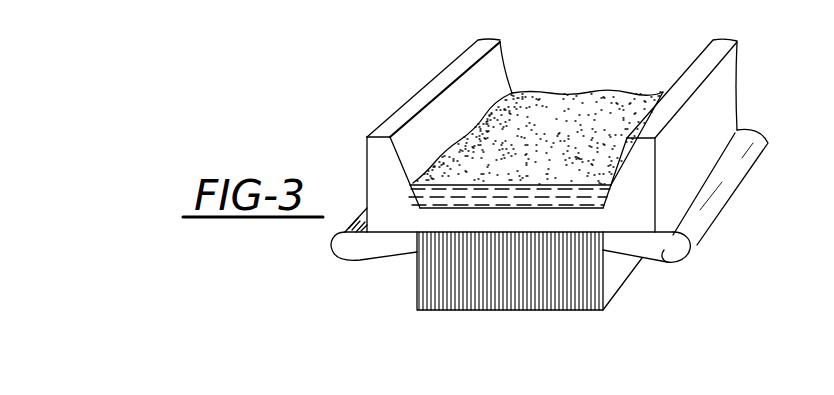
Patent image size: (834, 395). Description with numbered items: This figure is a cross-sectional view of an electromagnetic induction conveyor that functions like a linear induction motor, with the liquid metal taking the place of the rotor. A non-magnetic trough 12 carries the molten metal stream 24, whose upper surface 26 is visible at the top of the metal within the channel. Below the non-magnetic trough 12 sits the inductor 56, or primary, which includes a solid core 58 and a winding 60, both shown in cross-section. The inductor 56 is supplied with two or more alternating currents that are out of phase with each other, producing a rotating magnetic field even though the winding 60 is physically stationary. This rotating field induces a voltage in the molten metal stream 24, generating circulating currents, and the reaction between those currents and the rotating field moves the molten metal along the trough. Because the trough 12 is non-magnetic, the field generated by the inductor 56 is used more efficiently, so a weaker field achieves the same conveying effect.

The non-magnetic trough 12 is at (635, 218).
The molten metal stream 24 is at (600, 195).
The upper surface 26 is at (545, 152).
The inductor 56 is at (412, 267).
The solid core 58 is at (580, 282).
The winding 60 is at (662, 254).